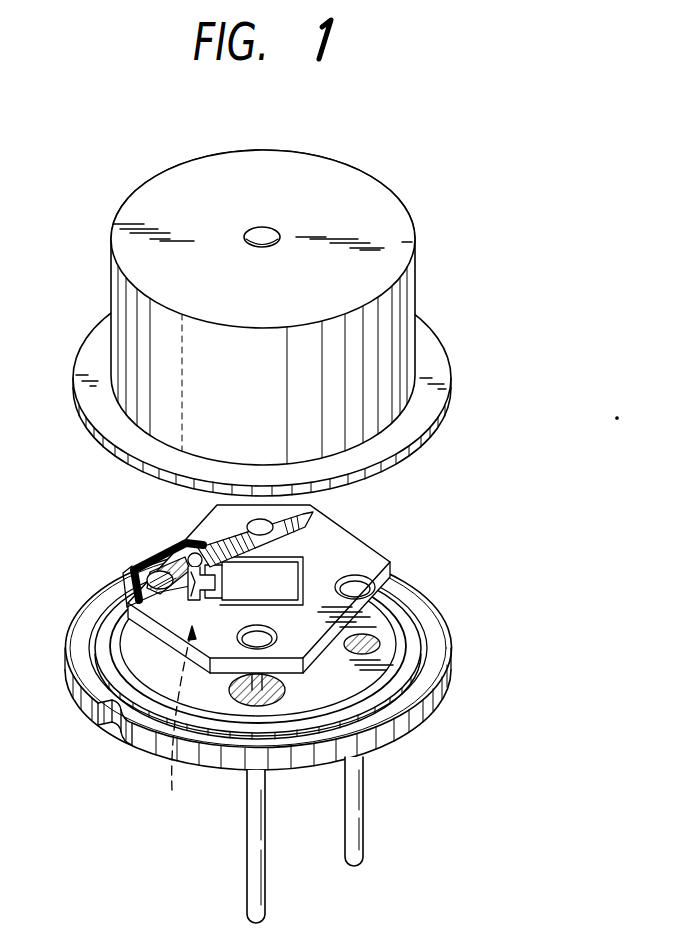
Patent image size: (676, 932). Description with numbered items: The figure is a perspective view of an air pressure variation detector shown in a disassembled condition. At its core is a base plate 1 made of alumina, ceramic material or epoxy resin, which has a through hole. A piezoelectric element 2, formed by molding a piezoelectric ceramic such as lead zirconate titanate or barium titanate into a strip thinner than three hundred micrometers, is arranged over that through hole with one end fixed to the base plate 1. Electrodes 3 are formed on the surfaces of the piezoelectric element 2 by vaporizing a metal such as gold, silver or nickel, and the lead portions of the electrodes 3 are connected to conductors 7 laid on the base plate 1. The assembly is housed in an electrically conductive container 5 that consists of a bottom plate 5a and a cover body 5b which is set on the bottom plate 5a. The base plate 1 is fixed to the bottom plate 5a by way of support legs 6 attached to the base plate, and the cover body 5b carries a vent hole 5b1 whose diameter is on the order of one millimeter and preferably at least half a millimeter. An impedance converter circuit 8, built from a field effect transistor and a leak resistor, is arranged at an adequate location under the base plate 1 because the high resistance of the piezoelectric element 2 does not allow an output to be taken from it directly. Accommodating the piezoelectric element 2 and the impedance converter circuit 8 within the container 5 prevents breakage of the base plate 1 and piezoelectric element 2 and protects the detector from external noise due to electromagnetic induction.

The base plate 1 is at (337, 530).
The piezoelectric element 2 is at (175, 607).
The electrodes 3 is at (170, 602).
The electrically conductive container 5 is at (539, 377).
The bottom plate 5a is at (438, 607).
The cover body 5b is at (452, 374).
The vent hole 5b1 is at (259, 224).
The support legs 6 is at (266, 895).
The conductors 7 is at (217, 533).
The impedance converter circuit 8 is at (174, 722).